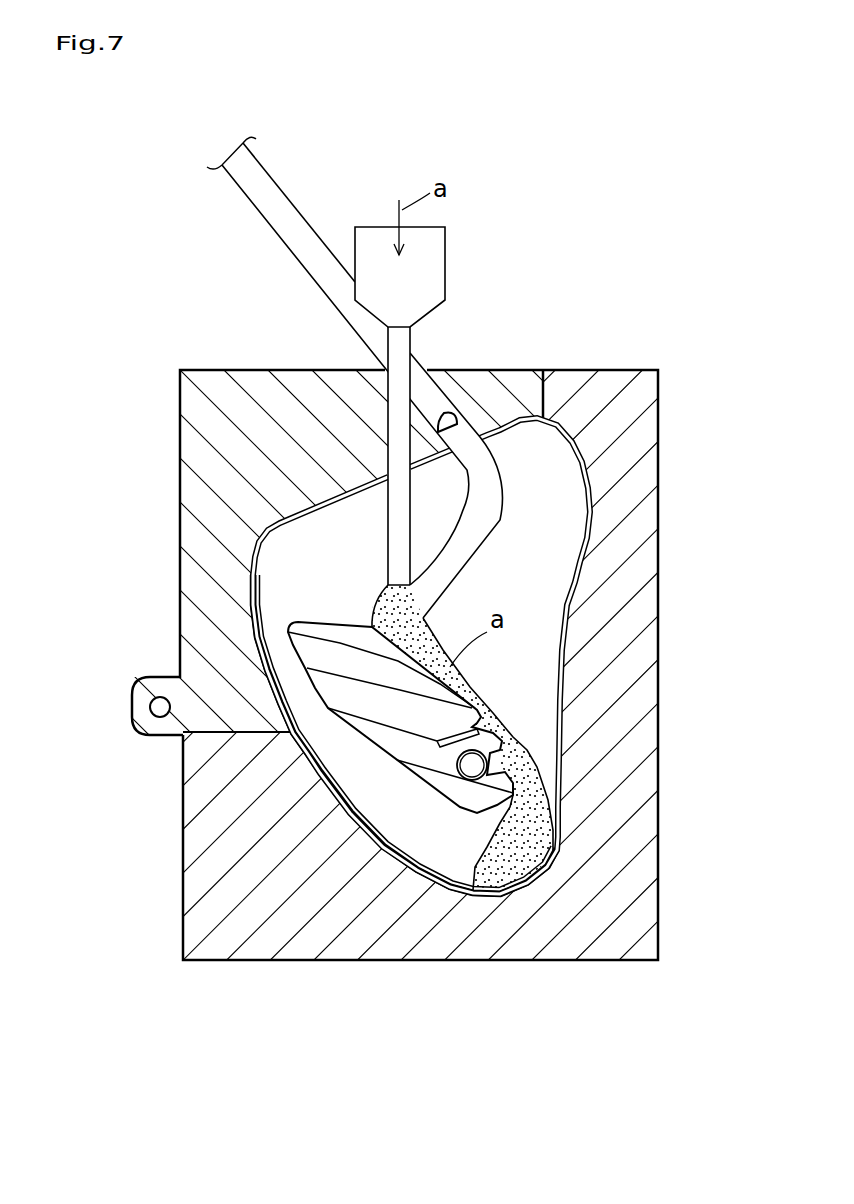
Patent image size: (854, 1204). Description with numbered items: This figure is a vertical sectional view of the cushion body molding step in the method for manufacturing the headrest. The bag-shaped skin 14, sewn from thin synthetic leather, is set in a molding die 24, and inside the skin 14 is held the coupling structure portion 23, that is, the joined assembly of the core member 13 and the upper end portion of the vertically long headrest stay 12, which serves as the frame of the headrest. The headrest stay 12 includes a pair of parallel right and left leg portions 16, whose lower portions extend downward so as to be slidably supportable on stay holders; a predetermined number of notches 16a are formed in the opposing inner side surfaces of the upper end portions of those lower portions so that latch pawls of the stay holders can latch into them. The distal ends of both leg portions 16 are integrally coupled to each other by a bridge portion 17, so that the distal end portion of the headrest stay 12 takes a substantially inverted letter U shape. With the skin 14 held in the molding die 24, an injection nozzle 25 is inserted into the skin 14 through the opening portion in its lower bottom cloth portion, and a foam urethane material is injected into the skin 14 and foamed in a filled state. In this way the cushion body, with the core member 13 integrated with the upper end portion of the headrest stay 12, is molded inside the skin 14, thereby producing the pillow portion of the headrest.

The headrest stay 12 is at (507, 465).
The core member 13 is at (308, 617).
The skin 14 is at (568, 633).
The leg portions 16 is at (288, 220).
The notches 16a is at (441, 412).
The bridge portion 17 is at (477, 779).
The coupling structure portion 23 is at (373, 749).
The molding die 24 is at (178, 632).
The injection nozzle 25 is at (395, 533).